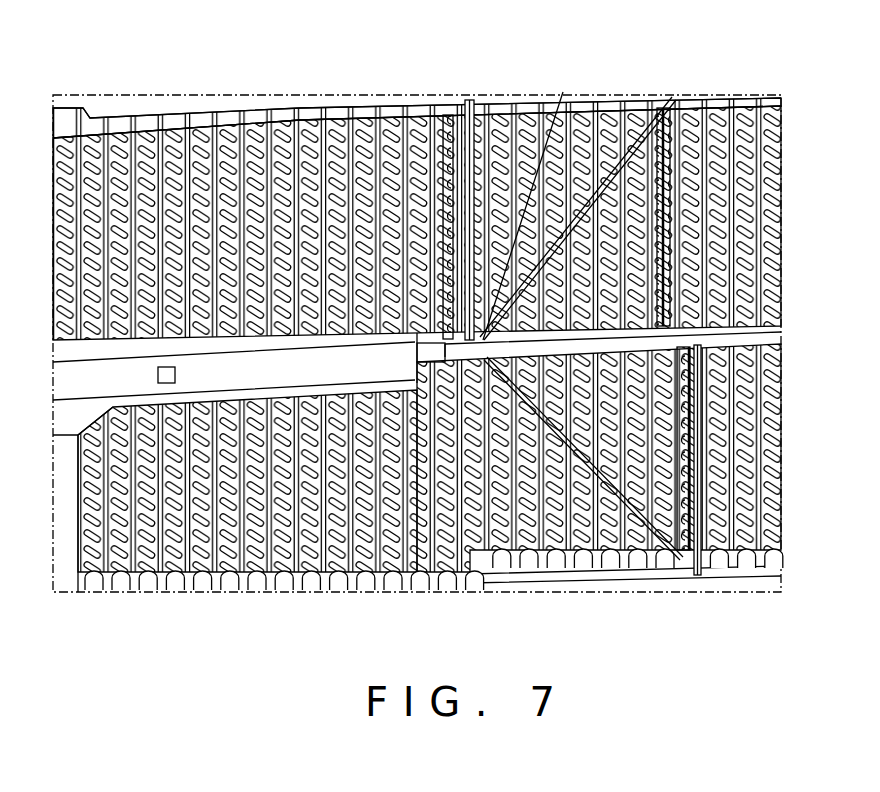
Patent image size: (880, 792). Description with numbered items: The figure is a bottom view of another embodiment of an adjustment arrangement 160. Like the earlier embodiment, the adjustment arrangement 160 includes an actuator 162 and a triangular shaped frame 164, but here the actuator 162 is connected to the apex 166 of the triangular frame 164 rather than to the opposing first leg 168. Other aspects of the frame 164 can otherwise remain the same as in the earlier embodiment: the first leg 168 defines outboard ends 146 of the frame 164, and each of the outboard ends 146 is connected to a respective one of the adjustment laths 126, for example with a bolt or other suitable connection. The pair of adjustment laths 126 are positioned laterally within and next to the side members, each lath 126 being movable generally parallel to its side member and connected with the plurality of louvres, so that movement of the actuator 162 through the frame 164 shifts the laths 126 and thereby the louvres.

The adjustment lath 126 is at (482, 96).
The outboard end 146 is at (687, 95).
The adjustment arrangement 160 is at (403, 583).
The actuator 162 is at (197, 597).
The triangular shaped frame 164 is at (645, 595).
The apex 166 is at (563, 92).
The first leg 168 is at (680, 243).